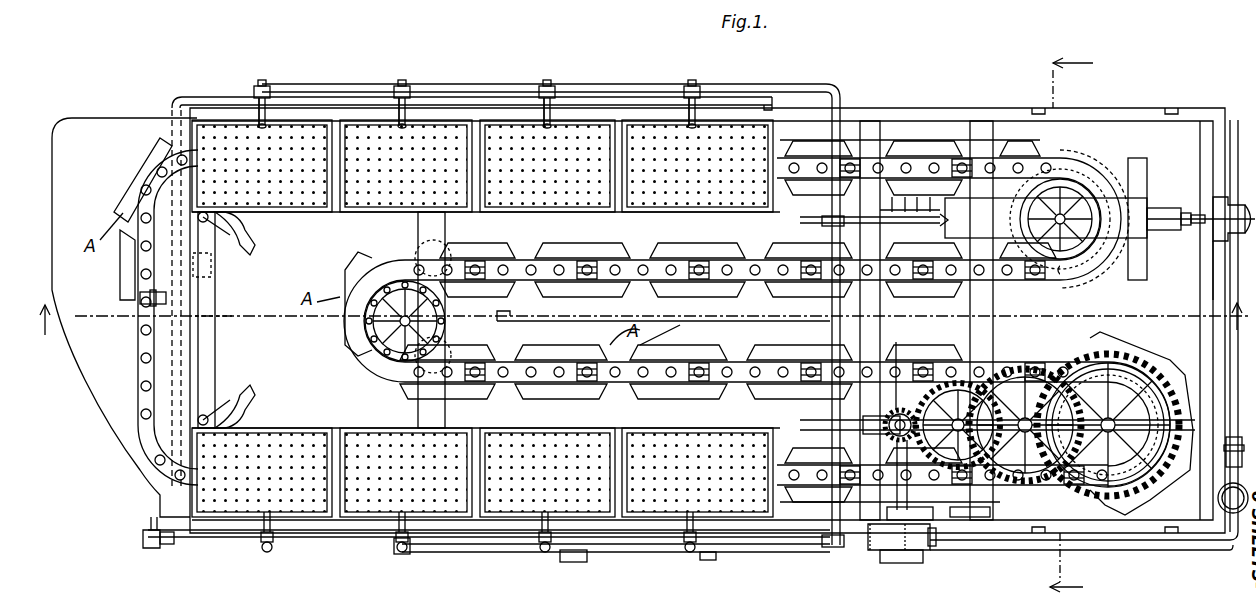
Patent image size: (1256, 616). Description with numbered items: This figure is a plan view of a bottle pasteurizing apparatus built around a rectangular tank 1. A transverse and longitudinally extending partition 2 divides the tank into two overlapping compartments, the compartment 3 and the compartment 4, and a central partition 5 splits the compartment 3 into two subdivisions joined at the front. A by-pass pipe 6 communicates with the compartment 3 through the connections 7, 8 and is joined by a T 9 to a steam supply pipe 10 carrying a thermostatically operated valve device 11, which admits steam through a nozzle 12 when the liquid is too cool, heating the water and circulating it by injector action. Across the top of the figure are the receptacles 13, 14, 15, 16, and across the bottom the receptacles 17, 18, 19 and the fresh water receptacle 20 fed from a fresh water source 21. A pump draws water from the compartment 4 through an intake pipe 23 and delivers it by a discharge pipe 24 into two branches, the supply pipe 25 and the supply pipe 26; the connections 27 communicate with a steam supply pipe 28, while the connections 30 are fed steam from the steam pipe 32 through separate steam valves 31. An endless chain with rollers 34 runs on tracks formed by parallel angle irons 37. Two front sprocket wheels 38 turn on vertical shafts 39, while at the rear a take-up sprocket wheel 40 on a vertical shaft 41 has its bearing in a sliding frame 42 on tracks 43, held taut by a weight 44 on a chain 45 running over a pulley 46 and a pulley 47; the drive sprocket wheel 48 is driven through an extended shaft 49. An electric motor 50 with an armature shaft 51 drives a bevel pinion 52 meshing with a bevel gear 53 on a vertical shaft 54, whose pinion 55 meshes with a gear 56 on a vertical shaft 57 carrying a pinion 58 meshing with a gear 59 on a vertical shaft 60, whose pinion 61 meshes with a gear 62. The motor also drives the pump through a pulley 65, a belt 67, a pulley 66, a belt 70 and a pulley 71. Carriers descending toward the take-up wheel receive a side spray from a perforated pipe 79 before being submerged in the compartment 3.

The tank 1 is at (922, 121).
The partition 2 is at (788, 213).
The compartment 3 is at (1172, 320).
The compartment 4 is at (662, 316).
The central partition 5 is at (745, 316).
The by-pass pipe 6 is at (1238, 378).
The connection 7 is at (1200, 458).
The connection 8 is at (1205, 187).
The T 9 is at (1238, 440).
The steam supply pipe 10 is at (1102, 551).
The thermostatically operated valve device 11 is at (1236, 486).
The nozzle 12 is at (645, 329).
The receptacle 13 is at (293, 205).
The receptacle 14 is at (392, 205).
The receptacle 15 is at (543, 205).
The receptacle 16 is at (705, 205).
The receptacle 17 is at (687, 442).
The receptacle 18 is at (523, 442).
The receptacle 19 is at (380, 440).
The fresh water receptacle 20 is at (283, 440).
The source of fresh water 21 is at (268, 528).
The intake pipe 23 is at (224, 317).
The discharge pipe 24 is at (214, 296).
The supply pipe 25 is at (170, 101).
The supply pipe 26 is at (180, 546).
The connection 27 is at (410, 545).
The steam supply pipe 28 is at (480, 554).
The connection 30 is at (262, 110).
The steam valve 31 is at (266, 80).
The steam pipe 32 is at (365, 84).
The roller 34 is at (166, 297).
The angle iron 37 is at (638, 270).
The sprocket wheel 38 is at (245, 248).
The shaft 39 is at (215, 230).
The sprocket wheel 40 is at (1040, 185).
The vertical shaft 41 is at (410, 326).
The sliding frame 42 is at (1060, 219).
The track 43 is at (1103, 157).
The weight 44 is at (1245, 196).
The chain 45 is at (1200, 233).
The pulley 46 is at (1243, 245).
The pulley 47 is at (1173, 210).
The sprocket wheel 48 is at (497, 312).
The extended shaft 49 is at (1108, 425).
The electric motor 50 is at (933, 550).
The armature shaft 51 is at (919, 503).
The bevel pinion 52 is at (895, 452).
The bevel gear 53 is at (887, 420).
The vertical shaft 54 is at (847, 425).
The pinion 55 is at (897, 366).
The gear 56 is at (975, 368).
The vertical shaft 57 is at (946, 446).
The pinion 58 is at (958, 425).
The gear 59 is at (1050, 367).
The vertical shaft 60 is at (1005, 460).
The pinion 61 is at (993, 485).
The gear 62 is at (1172, 410).
The pulley 65 is at (905, 563).
The pulley 66 is at (578, 563).
The belt 67 is at (712, 560).
The belt 70 is at (342, 540).
The pulley 71 is at (170, 550).
The perforated pipe 79 is at (915, 224).